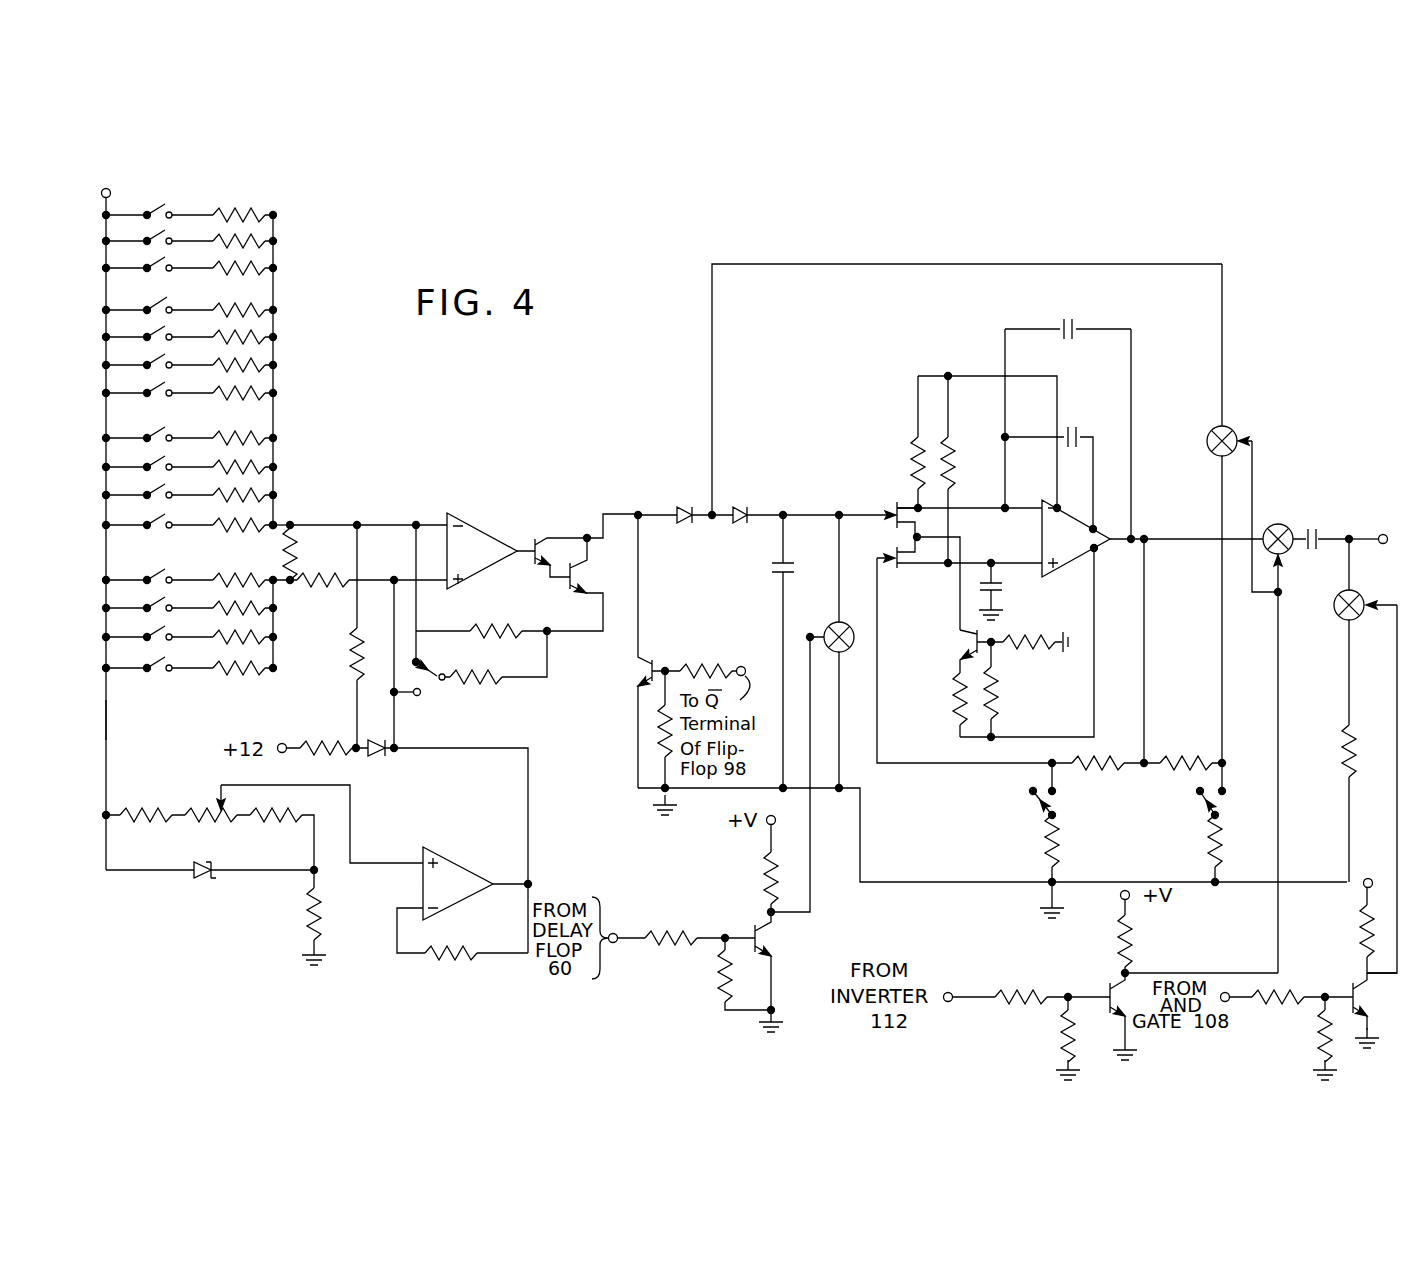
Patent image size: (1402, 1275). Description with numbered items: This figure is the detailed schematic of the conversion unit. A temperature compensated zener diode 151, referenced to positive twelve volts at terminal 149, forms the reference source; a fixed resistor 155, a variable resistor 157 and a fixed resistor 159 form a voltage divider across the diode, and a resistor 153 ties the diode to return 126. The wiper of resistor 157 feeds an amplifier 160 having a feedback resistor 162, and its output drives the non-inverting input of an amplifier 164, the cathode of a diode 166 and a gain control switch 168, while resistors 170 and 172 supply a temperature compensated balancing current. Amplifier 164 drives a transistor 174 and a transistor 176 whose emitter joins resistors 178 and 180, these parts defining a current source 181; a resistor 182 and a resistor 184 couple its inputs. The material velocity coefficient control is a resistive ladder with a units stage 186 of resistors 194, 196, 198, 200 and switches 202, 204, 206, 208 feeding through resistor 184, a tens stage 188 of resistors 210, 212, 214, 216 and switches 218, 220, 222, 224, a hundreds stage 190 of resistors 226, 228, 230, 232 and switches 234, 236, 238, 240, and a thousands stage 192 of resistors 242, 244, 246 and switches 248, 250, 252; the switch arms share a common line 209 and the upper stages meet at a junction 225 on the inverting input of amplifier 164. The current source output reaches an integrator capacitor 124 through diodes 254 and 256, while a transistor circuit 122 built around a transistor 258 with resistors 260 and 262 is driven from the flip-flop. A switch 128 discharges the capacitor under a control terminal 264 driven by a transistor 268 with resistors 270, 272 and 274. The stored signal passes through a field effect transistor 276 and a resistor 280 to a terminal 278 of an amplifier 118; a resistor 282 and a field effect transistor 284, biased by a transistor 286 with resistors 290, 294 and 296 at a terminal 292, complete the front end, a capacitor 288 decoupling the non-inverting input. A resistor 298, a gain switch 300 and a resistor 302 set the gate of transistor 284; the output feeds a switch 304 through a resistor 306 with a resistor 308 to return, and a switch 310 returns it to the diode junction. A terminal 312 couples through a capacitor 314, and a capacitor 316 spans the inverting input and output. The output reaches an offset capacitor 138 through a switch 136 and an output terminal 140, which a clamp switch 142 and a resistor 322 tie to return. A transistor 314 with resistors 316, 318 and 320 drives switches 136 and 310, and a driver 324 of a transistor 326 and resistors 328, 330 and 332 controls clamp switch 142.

The amplifier 118 is at (1050, 504).
The transistor switch circuit 122 is at (628, 693).
The integrator capacitor 124 is at (770, 568).
The return 126 is at (322, 960).
The switch 128 is at (853, 652).
The switch 136 is at (1280, 525).
The offset capacitor 138 is at (1305, 553).
The output terminal 140 is at (1383, 534).
The clamp switch 142 is at (1362, 598).
The terminal 149 is at (129, 194).
The temperature compensated zener diode 151 is at (206, 884).
The resistor 153 is at (308, 928).
The fixed resistor 155 is at (168, 812).
The variable resistor 157 is at (215, 822).
The fixed resistor 159 is at (256, 822).
The amplifier 160 is at (452, 862).
The feedback resistor 162 is at (448, 960).
The amplifier 164 is at (502, 497).
The diode 166 is at (378, 757).
The gain control switch 168 is at (433, 684).
The resistor 170 is at (335, 733).
The resistor 172 is at (352, 660).
The transistor 174 is at (537, 540).
The transistor 176 is at (580, 593).
The resistor 178 is at (510, 624).
The resistor 180 is at (495, 677).
The current source 181 is at (512, 494).
The resistor 182 is at (296, 536).
The resistor 184 is at (325, 590).
The units stage 186 is at (278, 636).
The tens stage 188 is at (285, 480).
The hundreds stage 190 is at (288, 355).
The thousands stage 192 is at (282, 246).
The resistor 194 is at (240, 576).
The resistor 196 is at (226, 606).
The resistor 198 is at (226, 635).
The resistor 200 is at (226, 666).
The switch 202 is at (160, 574).
The switch 204 is at (162, 598).
The switch 206 is at (162, 627).
The switch 208 is at (162, 658).
The common line 209 is at (107, 718).
The resistor 210 is at (224, 436).
The resistor 212 is at (226, 465).
The resistor 214 is at (226, 493).
The resistor 216 is at (226, 523).
The switch 218 is at (160, 434).
The switch 220 is at (162, 457).
The switch 222 is at (162, 485).
The switch 224 is at (162, 515).
The junction 225 is at (278, 522).
The resistor 226 is at (232, 304).
The resistor 228 is at (226, 335).
The resistor 230 is at (226, 363).
The resistor 232 is at (226, 391).
The switch 234 is at (160, 308).
The switch 236 is at (162, 327).
The switch 238 is at (162, 355).
The switch 240 is at (162, 383).
The resistor 242 is at (235, 212).
The resistor 244 is at (226, 239).
The resistor 246 is at (226, 266).
The switch 248 is at (147, 213).
The switch 250 is at (162, 231).
The switch 252 is at (162, 258).
The diode 254 is at (685, 506).
The diode 256 is at (747, 508).
The transistor 258 is at (652, 660).
The resistor 260 is at (655, 738).
The resistor 262 is at (708, 666).
The control terminal 264 is at (812, 636).
The transistor 268 is at (760, 925).
The resistor 270 is at (762, 860).
The resistor 272 is at (720, 992).
The resistor 274 is at (670, 942).
The field effect transistor 276 is at (895, 505).
The terminal 278 is at (1055, 507).
The resistor 280 is at (915, 450).
The resistor 282 is at (955, 445).
The field effect transistor 284 is at (878, 560).
The transistor 286 is at (975, 640).
The capacitor 288 is at (992, 587).
The resistor 290 is at (1028, 640).
The terminal 292 is at (1097, 550).
The resistor 294 is at (995, 690).
The resistor 296 is at (955, 700).
The resistor 298 is at (1110, 768).
The gain switch 300 is at (1030, 805).
The resistor 302 is at (1058, 852).
The switch 304 is at (1205, 805).
The resistor 306 is at (1170, 768).
The resistor 308 is at (1205, 852).
The switch 310 is at (1208, 448).
The terminal / driver 312 is at (1093, 528).
The capacitor / transistor 314 is at (1077, 434).
The capacitor / resistor 316 is at (1100, 305).
The resistor 318 is at (1060, 1022).
The resistor 320 is at (1007, 990).
The resistor 322 is at (1342, 765).
The driver 324 is at (1297, 1051).
The transistor 326 is at (1350, 978).
The resistor 328 is at (1353, 926).
The resistor 330 is at (1318, 1030).
The resistor 332 is at (1267, 975).